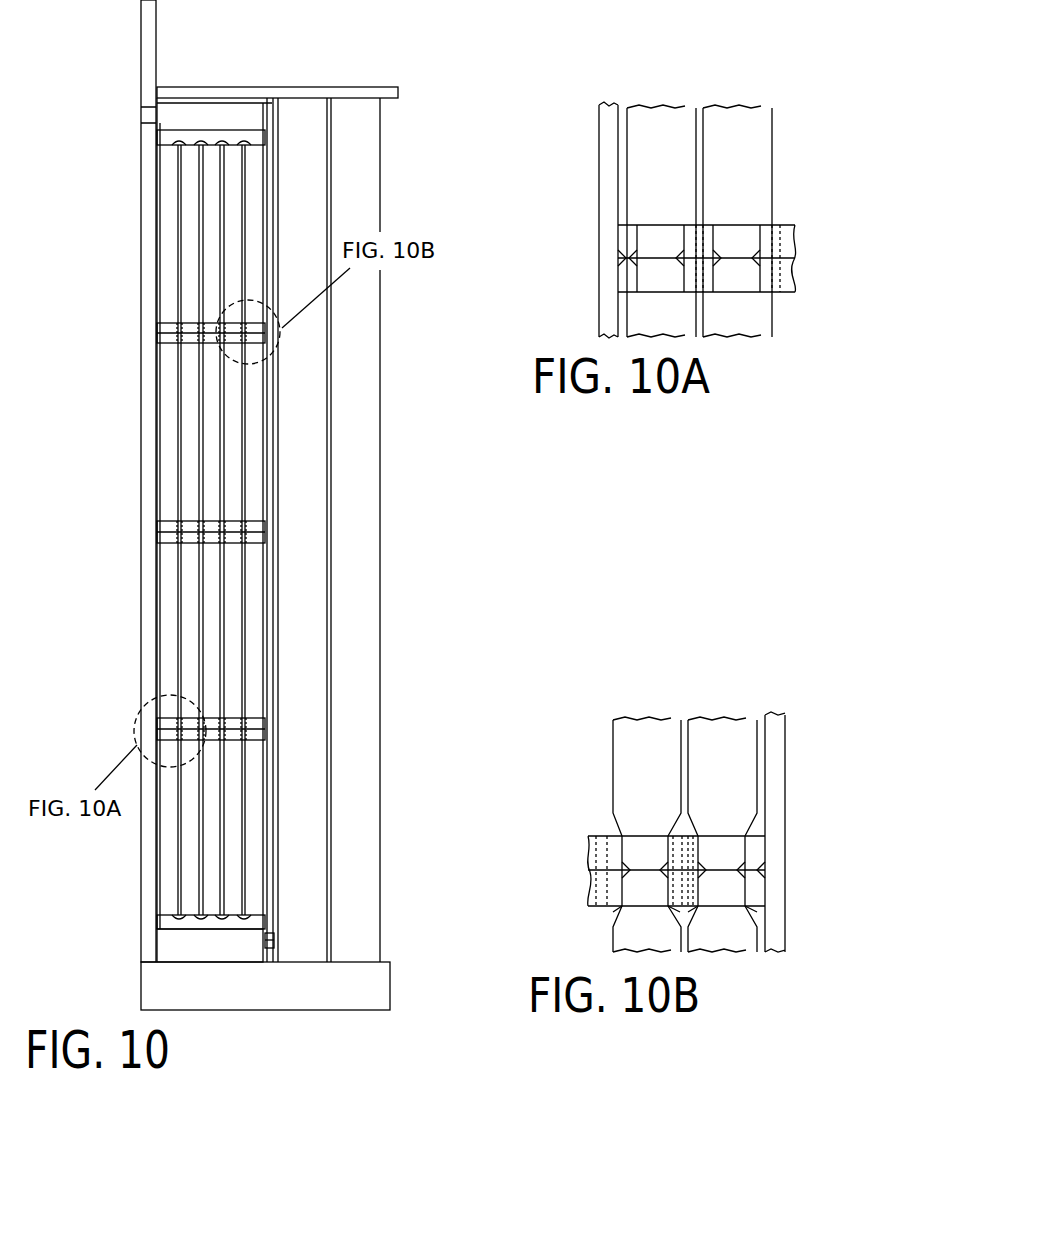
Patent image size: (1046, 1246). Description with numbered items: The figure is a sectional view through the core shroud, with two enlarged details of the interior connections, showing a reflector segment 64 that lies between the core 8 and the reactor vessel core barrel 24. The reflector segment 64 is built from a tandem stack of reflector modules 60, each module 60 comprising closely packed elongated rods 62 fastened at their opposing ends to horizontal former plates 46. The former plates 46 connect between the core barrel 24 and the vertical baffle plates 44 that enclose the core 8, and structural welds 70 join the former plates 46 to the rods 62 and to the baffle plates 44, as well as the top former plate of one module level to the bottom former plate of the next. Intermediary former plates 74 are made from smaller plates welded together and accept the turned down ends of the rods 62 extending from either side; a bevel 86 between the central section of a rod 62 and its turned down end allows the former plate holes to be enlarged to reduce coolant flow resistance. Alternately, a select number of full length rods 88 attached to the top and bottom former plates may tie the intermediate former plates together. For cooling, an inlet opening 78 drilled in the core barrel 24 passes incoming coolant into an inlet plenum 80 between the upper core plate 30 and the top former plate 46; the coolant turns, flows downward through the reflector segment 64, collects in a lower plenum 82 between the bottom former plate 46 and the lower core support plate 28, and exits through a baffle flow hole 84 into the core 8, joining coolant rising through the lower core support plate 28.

In FIG. 10, the core 8 is at (361, 708).
In FIG. 10, the reactor vessel core barrel 24 is at (141, 263).
In FIG. 10A, the reactor vessel core barrel 24 is at (598, 172).
In FIG. 10, the lower core support plate 28 is at (325, 1003).
In FIG. 10, the upper core plate 30 is at (303, 97).
In FIG. 10, the baffle plates 44 is at (273, 406).
In FIG. 10B, the baffle plates 44 is at (785, 785).
In FIG. 10, the former plates 46 is at (157, 130).
In FIG. 10, the reflector module 60 is at (292, 180).
In FIG. 10, the elongated rods 62 is at (253, 865).
In FIG. 10A, the elongated rods 62 is at (665, 125).
In FIG. 10B, the elongated rods 62 is at (638, 740).
In FIG. 10, the reflector segment 64 is at (289, 572).
In FIG. 10A, the structural weld 70 is at (622, 258).
In FIG. 10B, the structural weld 70 is at (742, 872).
In FIG. 10, the intermediary former plates 74 is at (157, 537).
In FIG. 10A, the intermediary former plates 74 is at (796, 262).
In FIG. 10B, the intermediary former plates 74 is at (589, 860).
In FIG. 10, the inlet opening 78 is at (141, 120).
In FIG. 10, the inlet plenum 80 is at (204, 110).
In FIG. 10, the lower plenum 82 is at (175, 947).
In FIG. 10, the baffle flow hole 84 is at (275, 940).
In FIG. 10B, the bevel 86 is at (750, 912).
In FIG. 10, the full length rods 88 is at (208, 447).